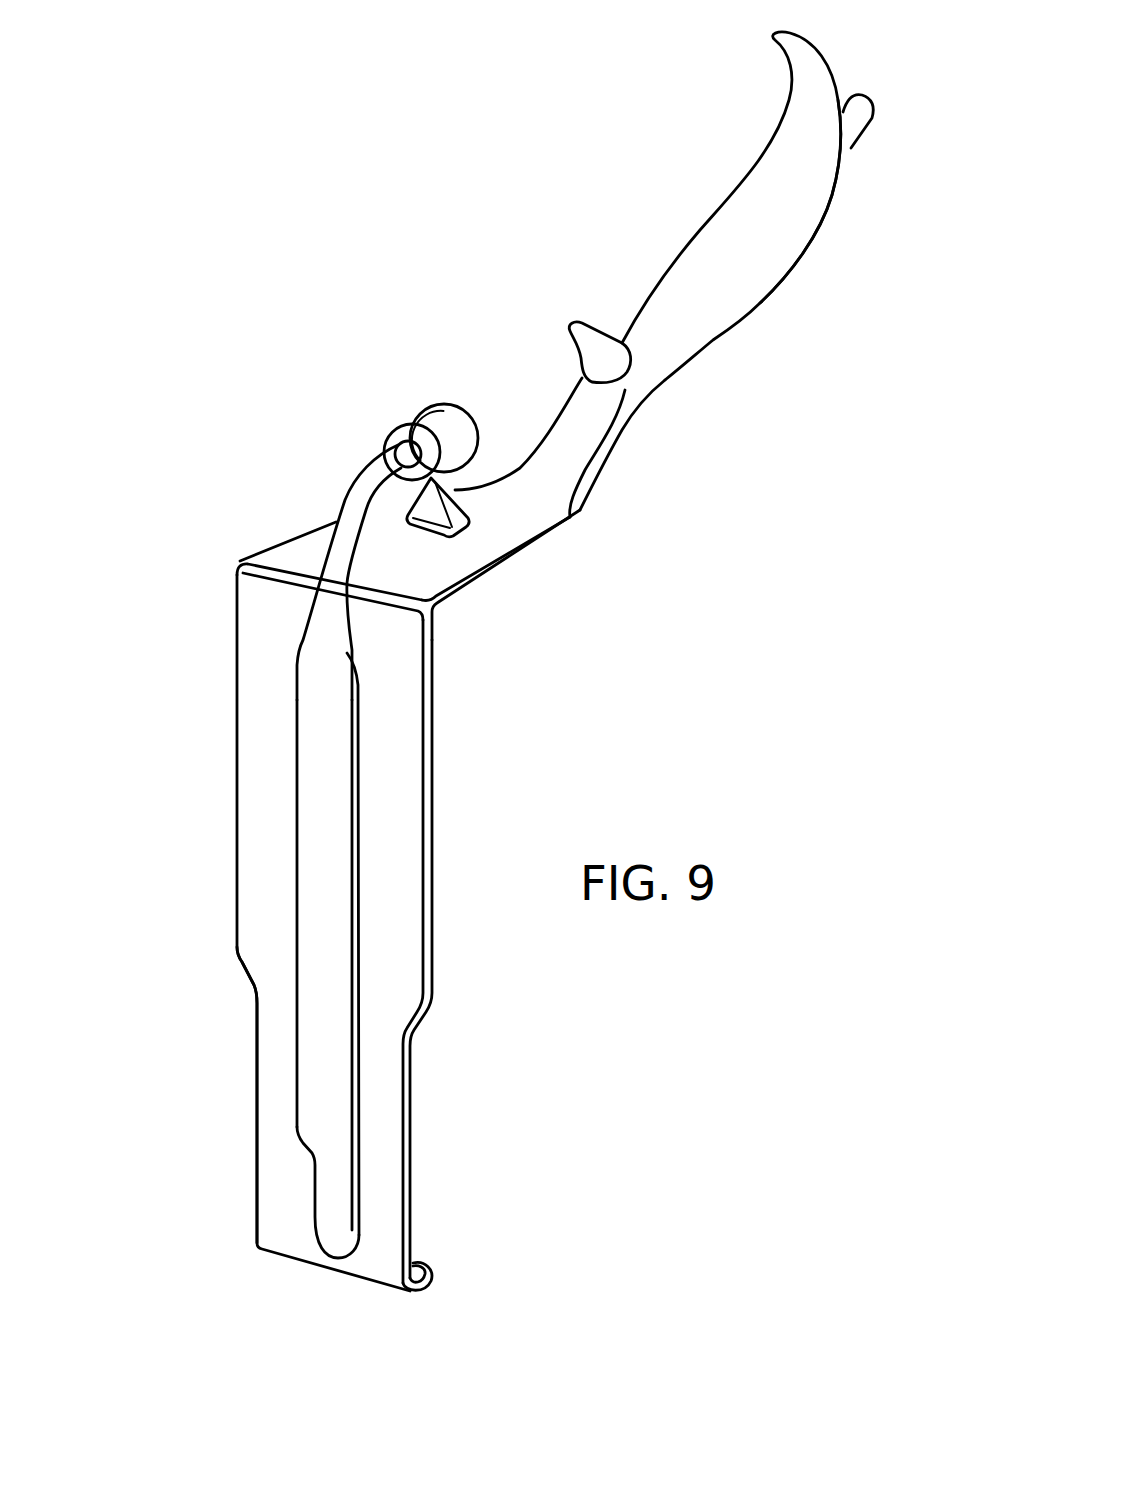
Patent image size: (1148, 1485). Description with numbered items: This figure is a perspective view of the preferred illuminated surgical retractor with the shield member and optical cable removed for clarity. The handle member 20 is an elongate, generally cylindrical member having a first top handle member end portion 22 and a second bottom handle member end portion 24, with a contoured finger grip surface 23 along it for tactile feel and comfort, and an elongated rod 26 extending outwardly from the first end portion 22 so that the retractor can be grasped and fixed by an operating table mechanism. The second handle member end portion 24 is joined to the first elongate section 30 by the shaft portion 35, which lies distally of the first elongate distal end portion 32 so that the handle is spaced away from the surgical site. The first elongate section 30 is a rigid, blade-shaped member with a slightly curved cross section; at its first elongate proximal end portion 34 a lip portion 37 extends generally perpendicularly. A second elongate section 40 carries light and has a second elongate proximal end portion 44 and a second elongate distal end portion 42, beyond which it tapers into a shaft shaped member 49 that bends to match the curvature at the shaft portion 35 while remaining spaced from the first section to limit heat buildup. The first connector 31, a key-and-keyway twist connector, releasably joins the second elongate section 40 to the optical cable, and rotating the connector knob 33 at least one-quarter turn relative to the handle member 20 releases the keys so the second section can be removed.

The handle member 20 is at (705, 252).
The first top handle member end portion 22 is at (790, 173).
The finger grip surface 23 is at (573, 332).
The second bottom handle member end portion 24 is at (587, 427).
The elongated rod 26 is at (853, 120).
The first elongate section 30 is at (235, 647).
The first connector 31 is at (433, 405).
The first elongate distal end portion 32 is at (235, 592).
The connector knob 33 is at (403, 423).
The first elongate proximal end portion 34 is at (257, 1203).
The shaft portion 35 is at (493, 530).
The lip portion 37 is at (436, 1285).
The second elongate section 40 is at (338, 932).
The second elongate distal end portion 42 is at (320, 747).
The second elongate proximal end portion 44 is at (315, 1087).
The shaft shaped member 49 is at (360, 493).